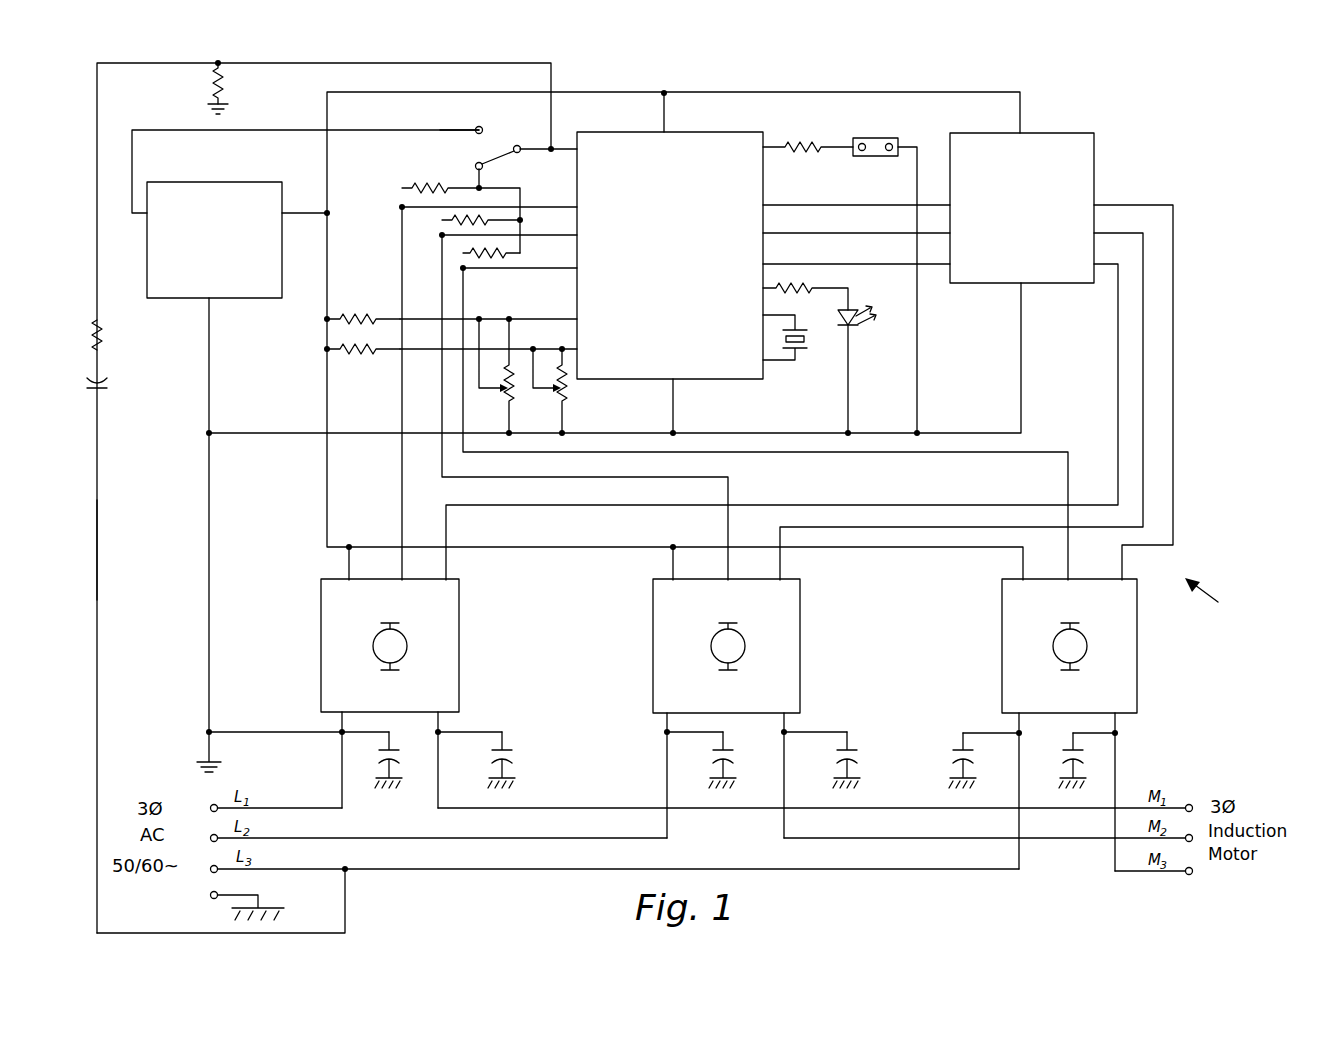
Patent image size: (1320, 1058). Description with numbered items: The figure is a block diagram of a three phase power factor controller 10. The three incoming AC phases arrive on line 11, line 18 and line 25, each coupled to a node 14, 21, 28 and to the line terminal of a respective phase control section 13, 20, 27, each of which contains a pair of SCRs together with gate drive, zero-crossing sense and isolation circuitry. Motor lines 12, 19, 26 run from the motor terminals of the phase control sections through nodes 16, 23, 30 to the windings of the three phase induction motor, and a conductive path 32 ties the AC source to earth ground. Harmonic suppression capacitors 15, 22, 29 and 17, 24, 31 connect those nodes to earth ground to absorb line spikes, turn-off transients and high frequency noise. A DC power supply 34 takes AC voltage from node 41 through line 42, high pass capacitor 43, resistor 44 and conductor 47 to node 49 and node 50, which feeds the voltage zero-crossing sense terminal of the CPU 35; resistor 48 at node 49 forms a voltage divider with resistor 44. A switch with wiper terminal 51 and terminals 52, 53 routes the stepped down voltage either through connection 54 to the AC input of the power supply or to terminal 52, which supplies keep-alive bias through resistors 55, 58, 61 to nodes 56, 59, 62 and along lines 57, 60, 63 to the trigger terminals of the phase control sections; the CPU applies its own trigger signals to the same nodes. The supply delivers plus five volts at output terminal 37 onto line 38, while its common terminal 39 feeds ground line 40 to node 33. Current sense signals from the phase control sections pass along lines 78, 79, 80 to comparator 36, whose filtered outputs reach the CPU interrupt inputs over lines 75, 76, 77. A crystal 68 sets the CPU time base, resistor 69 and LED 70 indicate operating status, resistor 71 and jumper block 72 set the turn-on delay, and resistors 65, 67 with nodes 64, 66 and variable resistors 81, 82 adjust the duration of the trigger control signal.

The power factor controller 10 is at (1207, 602).
The line 11 is at (312, 782).
The line 12 is at (597, 808).
The phase control section 13 is at (459, 617).
The node 14 is at (338, 735).
The capacitor 15 is at (422, 720).
The node 16 is at (440, 735).
The capacitor 17 is at (505, 752).
The line 18 is at (640, 838).
The line 19 is at (916, 838).
The phase control section 20 is at (800, 617).
The node 21 is at (664, 734).
The capacitor 22 is at (728, 752).
The node 23 is at (786, 735).
The capacitor 24 is at (850, 752).
The line 25 is at (982, 869).
The line 26 is at (1113, 864).
The phase control section 27 is at (1137, 617).
The node 28 is at (1022, 735).
The capacitor 29 is at (963, 733).
The node 30 is at (1118, 735).
The capacitor 31 is at (1074, 752).
The conductive path 32 is at (250, 890).
The node 33 is at (211, 731).
The DC power supply 34 is at (232, 182).
The CPU 35 is at (711, 380).
The comparator 36 is at (1055, 133).
The output terminal 37 is at (288, 212).
The line 38 is at (833, 93).
The common terminal 39 is at (212, 300).
The line 40 is at (210, 382).
The node 41 is at (344, 866).
The line 42 is at (97, 548).
The capacitor 43 is at (100, 390).
The resistor 44 is at (100, 340).
The wire 47 is at (165, 64).
The resistor 48 is at (209, 104).
The node 49 is at (222, 67).
The node 50 is at (551, 152).
The wiper terminal 51 is at (516, 154).
The terminal 52 is at (475, 168).
The terminal 53 is at (479, 127).
The AC input line 54 is at (133, 214).
The resistor 55 is at (425, 187).
The node 56 is at (400, 207).
The line 57 is at (400, 454).
The resistor 58 is at (468, 221).
The node 59 is at (442, 238).
The line 60 is at (440, 462).
The resistor 61 is at (500, 254).
The node 62 is at (465, 270).
The line 63 is at (490, 453).
The node 64 is at (509, 316).
The resistor 65 is at (363, 316).
The node 66 is at (562, 347).
The resistor 67 is at (362, 352).
The crystal 68 is at (810, 345).
The resistor 69 is at (805, 287).
The light emitting diode 70 is at (855, 328).
The resistor 71 is at (812, 140).
The jumper block 72 is at (892, 137).
The line 75 is at (828, 263).
The line 76 is at (858, 232).
The line 77 is at (833, 204).
The I1 feedback line 78 is at (1116, 290).
The I2 feedback line 79 is at (1142, 232).
The I3 feedback line 80 is at (1160, 204).
The variable resistor 81 is at (505, 405).
The variable resistor 82 is at (567, 400).